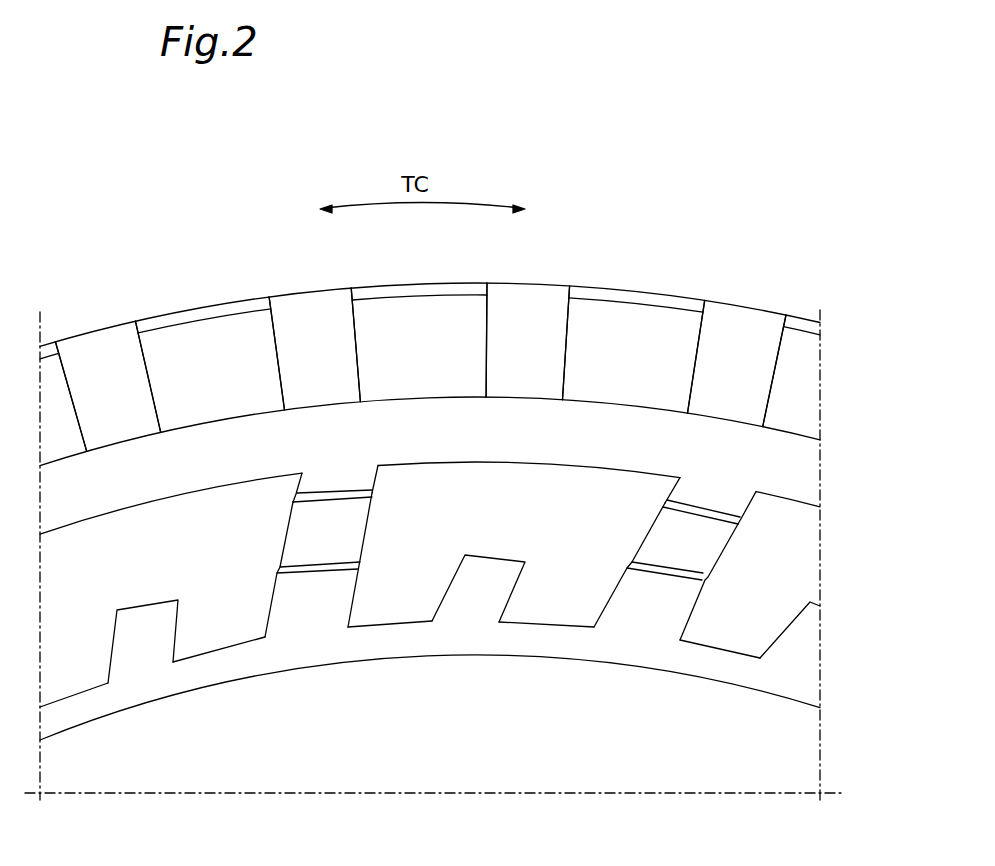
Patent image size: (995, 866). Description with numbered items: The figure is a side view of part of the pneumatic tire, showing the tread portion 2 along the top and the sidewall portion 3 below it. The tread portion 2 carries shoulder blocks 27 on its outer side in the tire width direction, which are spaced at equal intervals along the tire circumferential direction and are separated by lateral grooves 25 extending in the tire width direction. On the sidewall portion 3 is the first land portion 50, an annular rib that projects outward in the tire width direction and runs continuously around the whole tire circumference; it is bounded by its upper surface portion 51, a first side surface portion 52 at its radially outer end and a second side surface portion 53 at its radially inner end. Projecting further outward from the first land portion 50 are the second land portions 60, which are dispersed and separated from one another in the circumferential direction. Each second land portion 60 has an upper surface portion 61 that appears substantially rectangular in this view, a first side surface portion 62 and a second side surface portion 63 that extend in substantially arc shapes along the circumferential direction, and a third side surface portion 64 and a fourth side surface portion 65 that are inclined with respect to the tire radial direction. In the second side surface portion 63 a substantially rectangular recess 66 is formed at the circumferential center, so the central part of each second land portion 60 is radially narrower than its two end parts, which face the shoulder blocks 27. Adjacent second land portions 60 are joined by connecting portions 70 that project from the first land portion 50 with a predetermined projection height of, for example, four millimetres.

The tread portion 2 is at (613, 280).
The sidewall portion 3 is at (806, 775).
The lateral grooves 25 is at (514, 400).
The shoulder block 27 is at (420, 283).
The first land portion 50 is at (806, 468).
The upper surface portion 51 is at (461, 648).
The first side surface portion 52 is at (800, 433).
The second side surface portion 53 is at (800, 706).
The second land portion 60 is at (461, 553).
The upper surface portion 61 is at (461, 474).
The first side surface portion 62 is at (493, 464).
The second side surface portion 63 is at (393, 626).
The third side surface portion 64 is at (367, 529).
The fourth side surface portion 65 is at (485, 596).
The recess 66 is at (447, 598).
The connecting portion 70 is at (330, 491).